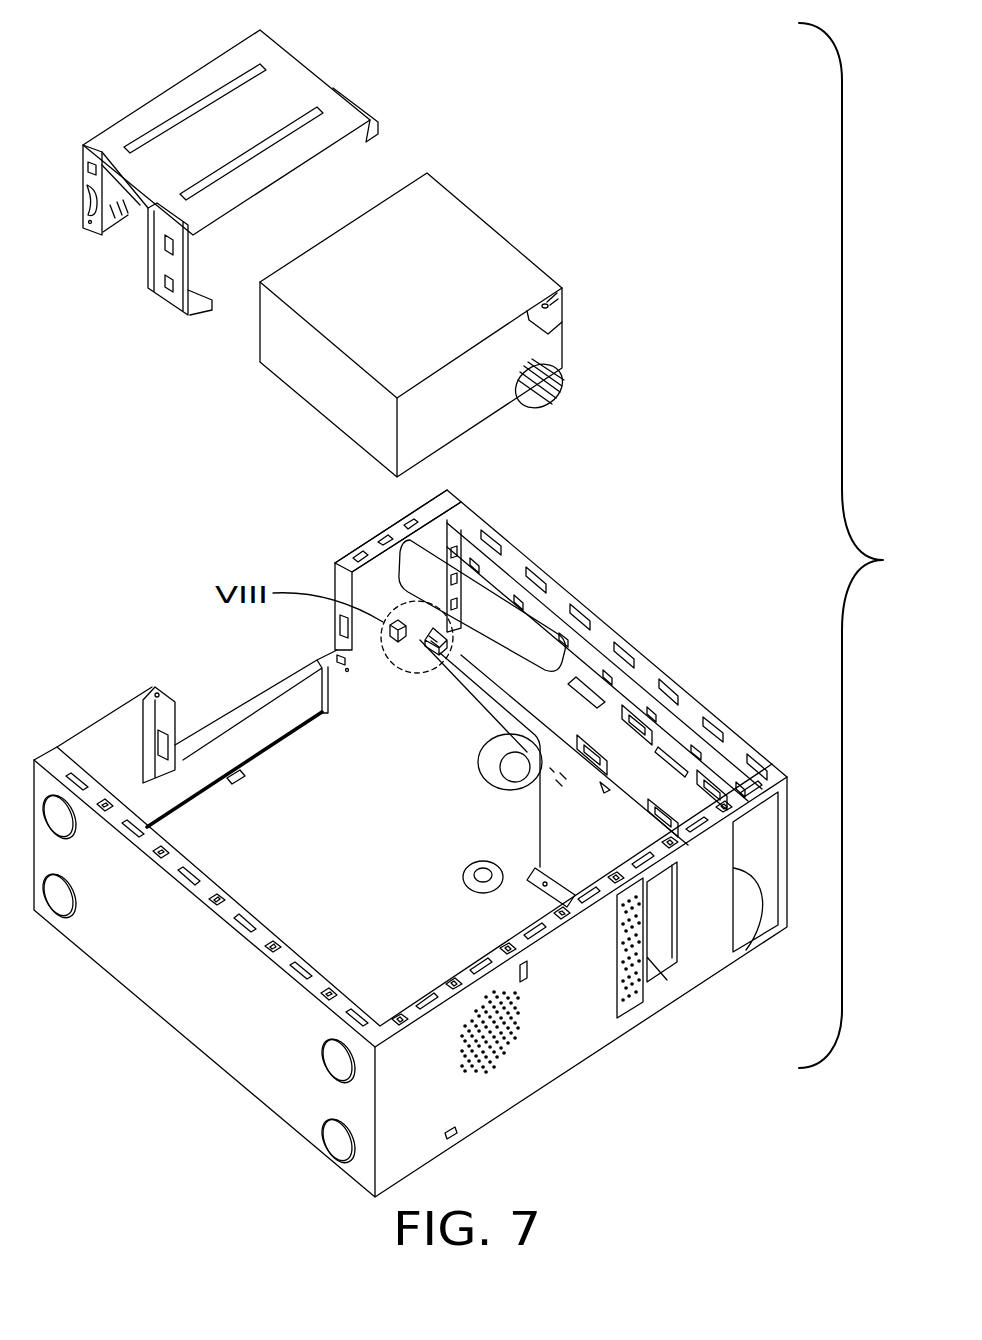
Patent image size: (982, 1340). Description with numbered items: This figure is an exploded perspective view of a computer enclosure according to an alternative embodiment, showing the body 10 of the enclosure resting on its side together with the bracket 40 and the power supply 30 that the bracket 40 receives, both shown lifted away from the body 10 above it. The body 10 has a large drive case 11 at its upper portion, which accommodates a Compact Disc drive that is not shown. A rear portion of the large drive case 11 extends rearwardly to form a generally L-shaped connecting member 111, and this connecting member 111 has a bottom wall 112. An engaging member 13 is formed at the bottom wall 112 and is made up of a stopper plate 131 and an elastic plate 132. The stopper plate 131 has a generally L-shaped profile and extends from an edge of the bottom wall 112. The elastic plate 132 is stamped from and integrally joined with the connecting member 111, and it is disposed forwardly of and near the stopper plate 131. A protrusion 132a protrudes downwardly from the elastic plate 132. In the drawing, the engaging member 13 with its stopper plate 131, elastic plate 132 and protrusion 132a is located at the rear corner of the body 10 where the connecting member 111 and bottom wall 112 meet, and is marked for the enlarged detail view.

The bracket 40 is at (304, 54).
The power supply 30 is at (513, 229).
The body 10 is at (677, 675).
The large drive case 11 is at (653, 767).
The connecting member 111 is at (547, 683).
The bottom wall 112 is at (477, 690).
The engaging member 13 is at (628, 453).
The stopper plate 131 is at (398, 625).
The elastic plate 132 is at (434, 640).
The protrusion 132a is at (440, 648).